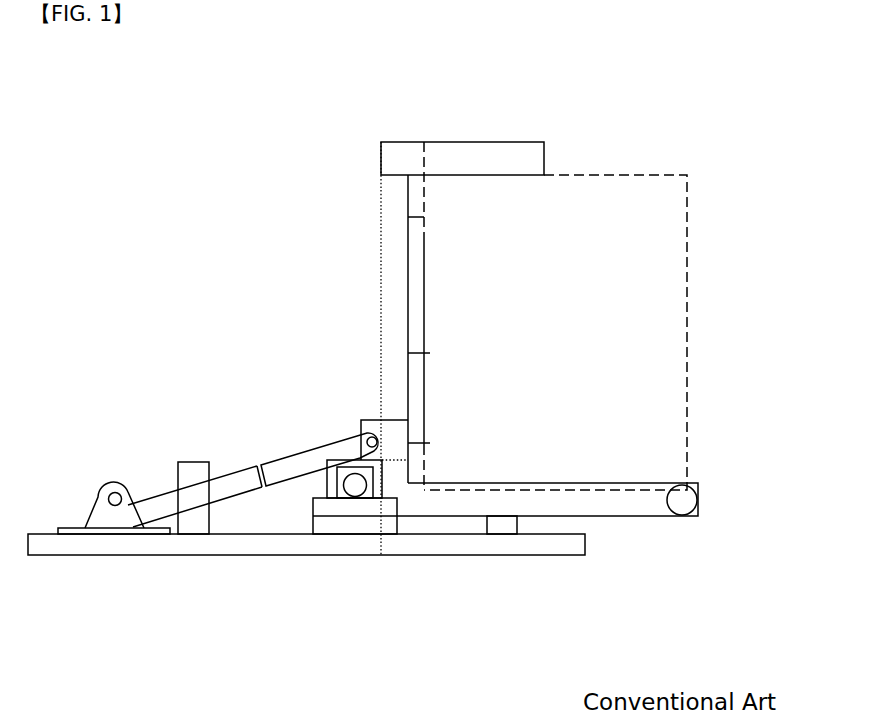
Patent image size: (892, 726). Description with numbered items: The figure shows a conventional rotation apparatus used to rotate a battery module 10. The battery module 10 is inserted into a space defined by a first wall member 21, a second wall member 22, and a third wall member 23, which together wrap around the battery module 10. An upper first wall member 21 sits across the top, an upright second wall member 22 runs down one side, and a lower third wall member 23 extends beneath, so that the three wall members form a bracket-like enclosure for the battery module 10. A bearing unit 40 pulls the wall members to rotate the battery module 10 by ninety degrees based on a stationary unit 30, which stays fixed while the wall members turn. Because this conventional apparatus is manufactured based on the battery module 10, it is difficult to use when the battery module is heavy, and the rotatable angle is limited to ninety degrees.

The battery module 10 is at (675, 312).
The first wall member 21 is at (477, 155).
The second wall member 22 is at (390, 285).
The third wall member 23 is at (637, 507).
The stationary unit 30 is at (302, 520).
The bearing unit 40 is at (233, 480).